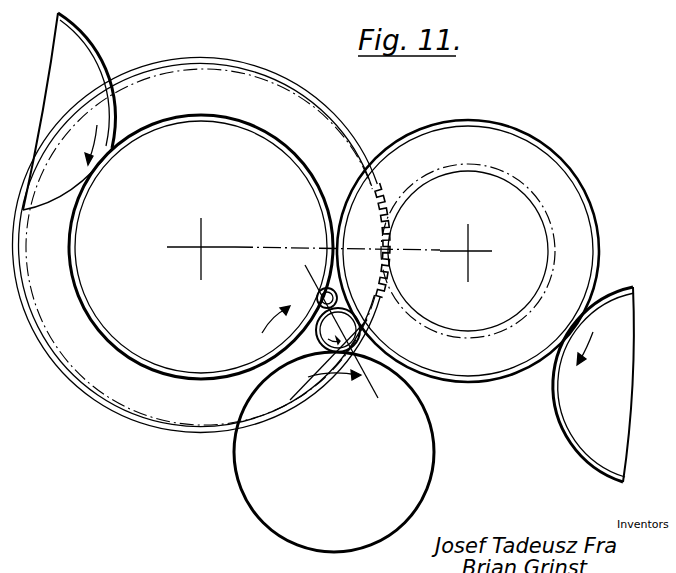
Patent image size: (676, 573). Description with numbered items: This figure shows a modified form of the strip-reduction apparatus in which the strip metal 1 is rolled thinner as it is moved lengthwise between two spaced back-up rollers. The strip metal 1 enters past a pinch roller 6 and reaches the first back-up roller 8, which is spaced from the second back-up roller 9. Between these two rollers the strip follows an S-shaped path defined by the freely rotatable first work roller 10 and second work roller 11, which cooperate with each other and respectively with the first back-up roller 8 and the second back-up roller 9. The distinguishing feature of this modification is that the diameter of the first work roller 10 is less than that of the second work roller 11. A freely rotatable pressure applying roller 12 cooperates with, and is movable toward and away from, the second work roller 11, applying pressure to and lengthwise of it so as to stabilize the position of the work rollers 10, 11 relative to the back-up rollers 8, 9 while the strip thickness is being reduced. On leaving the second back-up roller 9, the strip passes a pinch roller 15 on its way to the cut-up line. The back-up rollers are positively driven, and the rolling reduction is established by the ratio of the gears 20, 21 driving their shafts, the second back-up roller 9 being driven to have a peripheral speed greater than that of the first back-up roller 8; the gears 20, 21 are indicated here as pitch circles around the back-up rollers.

The strip metal 1 is at (70, 25).
The pinch roller 6 is at (70, 50).
The first back-up roller 8 is at (257, 155).
The second back-up roller 9 is at (455, 130).
The first work roller 10 is at (323, 301).
The second work roller 11 is at (353, 325).
The pressure applying roller 12 is at (400, 417).
The pinch roller 15 is at (617, 303).
The gear 20 is at (252, 73).
The gear 21 is at (520, 183).